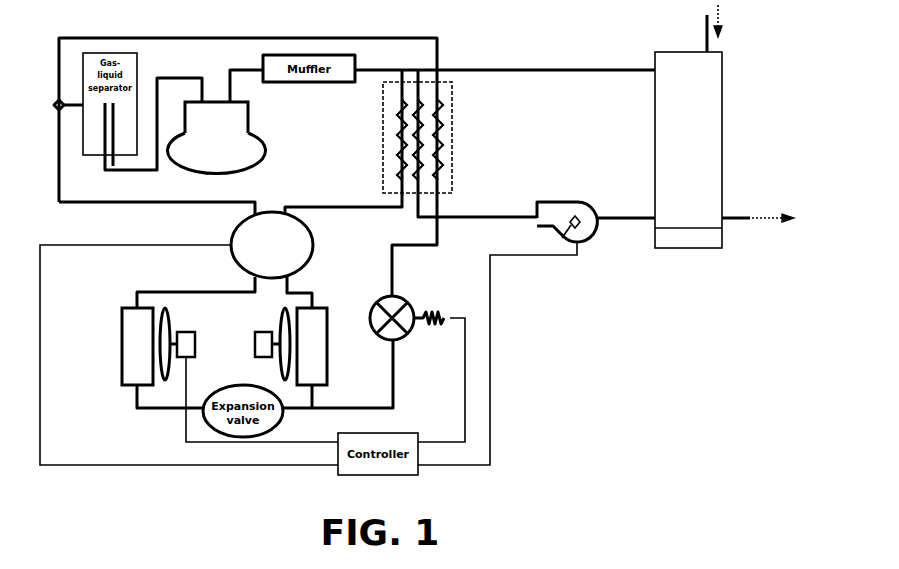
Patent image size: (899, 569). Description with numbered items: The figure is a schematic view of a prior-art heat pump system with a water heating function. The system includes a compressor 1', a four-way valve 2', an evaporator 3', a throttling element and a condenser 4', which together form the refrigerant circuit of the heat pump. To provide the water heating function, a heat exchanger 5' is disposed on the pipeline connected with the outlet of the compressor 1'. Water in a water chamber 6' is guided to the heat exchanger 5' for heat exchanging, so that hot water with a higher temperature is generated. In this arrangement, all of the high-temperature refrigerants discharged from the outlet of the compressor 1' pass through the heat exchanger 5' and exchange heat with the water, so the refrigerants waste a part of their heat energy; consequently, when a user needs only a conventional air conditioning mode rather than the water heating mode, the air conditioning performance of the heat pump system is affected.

The compressor 1' is at (234, 144).
The four-way valve 2' is at (298, 251).
The evaporator 3' is at (129, 346).
The condenser 4' is at (318, 348).
The heat exchanger 5' is at (448, 137).
The water chamber 6' is at (721, 150).